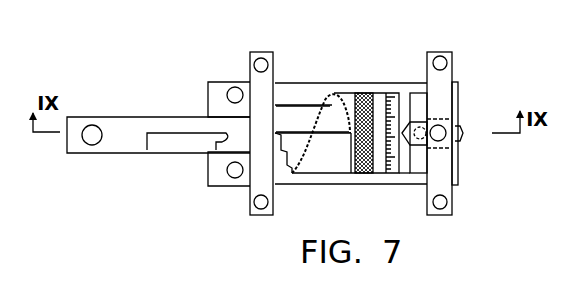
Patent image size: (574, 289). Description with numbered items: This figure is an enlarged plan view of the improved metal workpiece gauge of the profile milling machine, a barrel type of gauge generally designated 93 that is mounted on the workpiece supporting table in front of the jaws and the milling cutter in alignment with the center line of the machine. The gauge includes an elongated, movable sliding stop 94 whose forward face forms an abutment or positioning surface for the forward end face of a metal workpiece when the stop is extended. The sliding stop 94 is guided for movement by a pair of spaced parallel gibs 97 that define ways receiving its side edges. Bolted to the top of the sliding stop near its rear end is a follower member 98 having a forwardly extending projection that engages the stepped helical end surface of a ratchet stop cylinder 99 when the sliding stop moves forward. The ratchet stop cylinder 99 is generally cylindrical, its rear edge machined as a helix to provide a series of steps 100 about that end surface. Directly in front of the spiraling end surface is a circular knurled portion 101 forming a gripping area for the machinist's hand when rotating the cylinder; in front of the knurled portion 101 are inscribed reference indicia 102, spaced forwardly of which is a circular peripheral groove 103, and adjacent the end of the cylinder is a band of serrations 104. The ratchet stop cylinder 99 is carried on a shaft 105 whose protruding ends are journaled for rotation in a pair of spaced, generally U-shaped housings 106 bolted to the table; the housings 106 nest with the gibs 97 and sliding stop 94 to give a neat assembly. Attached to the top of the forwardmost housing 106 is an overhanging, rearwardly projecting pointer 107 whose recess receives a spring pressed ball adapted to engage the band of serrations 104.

The barrel gauge 93 is at (349, 52).
The sliding stop 94 is at (118, 147).
The gibs 97 is at (217, 92).
The follower member 98 is at (182, 142).
The ratchet stop cylinder 99 is at (334, 167).
The steps 100 is at (328, 92).
The knurled portion 101 is at (365, 92).
The reference indicia 102 is at (387, 102).
The circular peripheral groove 103 is at (403, 168).
The band of serrations 104 is at (422, 102).
The shaft 105 is at (298, 110).
The housings 106 is at (265, 80).
The pointer 107 is at (450, 122).